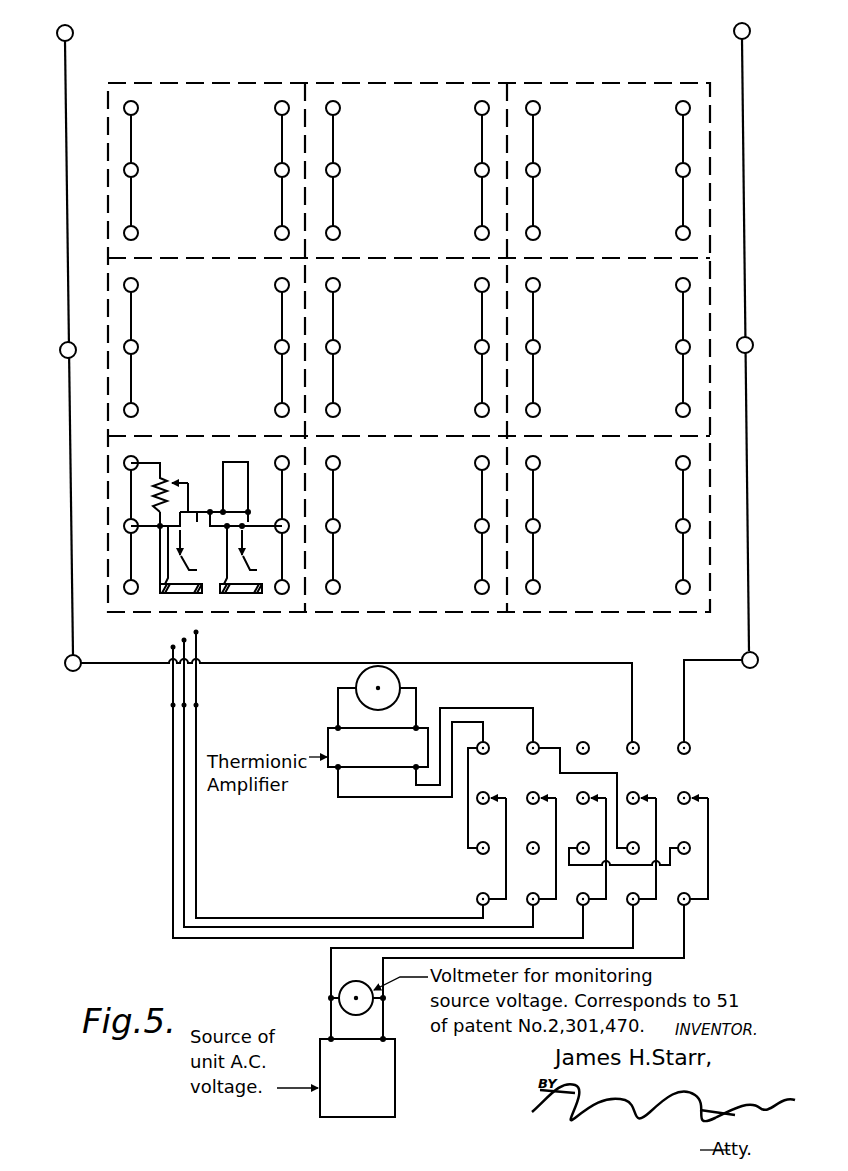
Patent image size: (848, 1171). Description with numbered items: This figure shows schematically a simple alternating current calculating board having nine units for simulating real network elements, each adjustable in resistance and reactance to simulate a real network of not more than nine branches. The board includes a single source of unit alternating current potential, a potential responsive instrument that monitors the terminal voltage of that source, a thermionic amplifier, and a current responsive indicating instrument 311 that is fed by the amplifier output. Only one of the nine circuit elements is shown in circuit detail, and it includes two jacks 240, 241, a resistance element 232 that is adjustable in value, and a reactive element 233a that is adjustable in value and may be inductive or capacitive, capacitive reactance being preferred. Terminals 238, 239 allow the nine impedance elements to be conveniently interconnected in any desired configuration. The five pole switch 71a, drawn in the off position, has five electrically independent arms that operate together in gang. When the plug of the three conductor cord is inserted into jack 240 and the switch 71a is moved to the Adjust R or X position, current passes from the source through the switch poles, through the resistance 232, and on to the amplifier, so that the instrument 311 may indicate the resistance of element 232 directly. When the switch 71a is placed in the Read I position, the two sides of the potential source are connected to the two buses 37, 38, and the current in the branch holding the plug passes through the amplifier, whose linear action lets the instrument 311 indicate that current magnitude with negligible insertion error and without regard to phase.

The bus 37 is at (66, 224).
The bus 38 is at (746, 241).
The resistance element 232 is at (186, 463).
The reactance element 233a is at (233, 459).
The terminal 238 is at (535, 309).
The terminal 239 is at (683, 303).
The jack 240 is at (168, 597).
The jack 241 is at (255, 598).
The five pole switch 71a is at (719, 879).
The instrument 311 is at (356, 686).